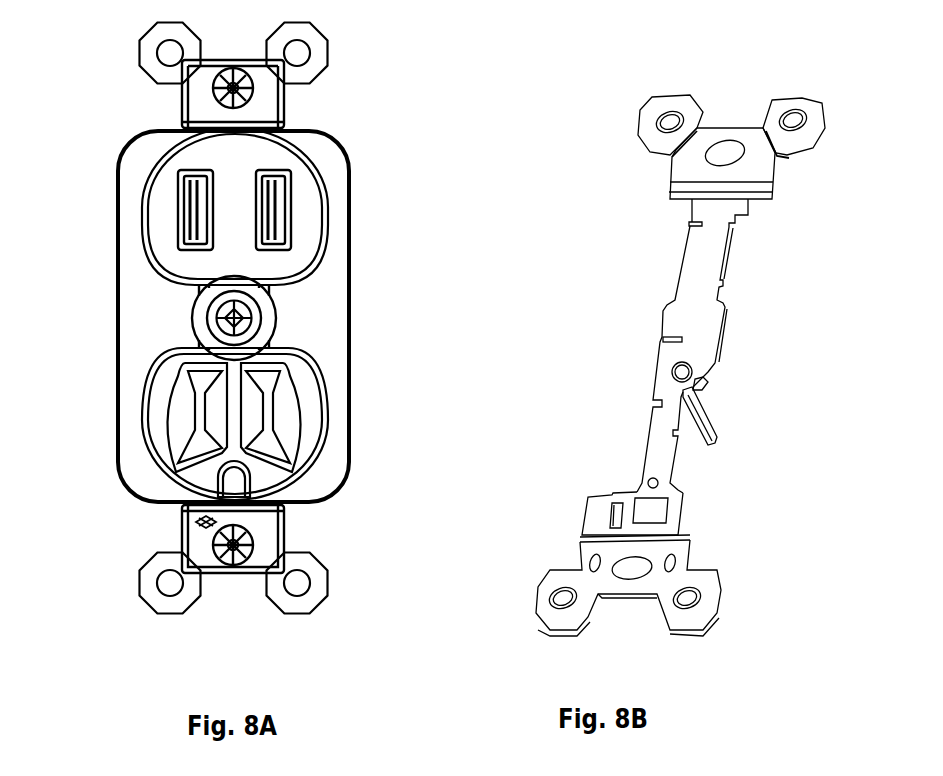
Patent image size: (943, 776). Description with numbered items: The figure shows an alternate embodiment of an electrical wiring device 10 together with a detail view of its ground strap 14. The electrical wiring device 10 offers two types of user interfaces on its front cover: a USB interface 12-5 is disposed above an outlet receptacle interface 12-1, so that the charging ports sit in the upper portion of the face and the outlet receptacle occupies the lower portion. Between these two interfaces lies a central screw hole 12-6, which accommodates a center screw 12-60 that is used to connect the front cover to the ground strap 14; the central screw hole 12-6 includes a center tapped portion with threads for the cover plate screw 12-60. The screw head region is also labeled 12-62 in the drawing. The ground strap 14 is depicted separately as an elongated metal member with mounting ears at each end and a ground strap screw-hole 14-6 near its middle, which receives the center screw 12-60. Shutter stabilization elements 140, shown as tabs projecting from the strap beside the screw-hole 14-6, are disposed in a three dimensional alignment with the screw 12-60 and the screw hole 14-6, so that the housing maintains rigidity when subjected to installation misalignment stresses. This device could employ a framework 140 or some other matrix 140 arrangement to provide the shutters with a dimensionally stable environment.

In FIG. 8A, the electrical wiring device 10 is at (356, 101).
In FIG. 8A, the USB interface 12-5 is at (186, 185).
In FIG. 8A, the center screw 12-60 is at (211, 303).
In FIG. 8A, the mounting screw 12-62 is at (231, 318).
In FIG. 8A, the central screw hole 12-6 is at (277, 318).
In FIG. 8A, the outlet receptacle interface 12-1 is at (252, 428).
In FIG. 8B, the ground strap 14 is at (722, 87).
In FIG. 8B, the ground strap screw-hole 14-6 is at (682, 363).
In FIG. 8B, the shutter stabilization elements 140 is at (707, 428).